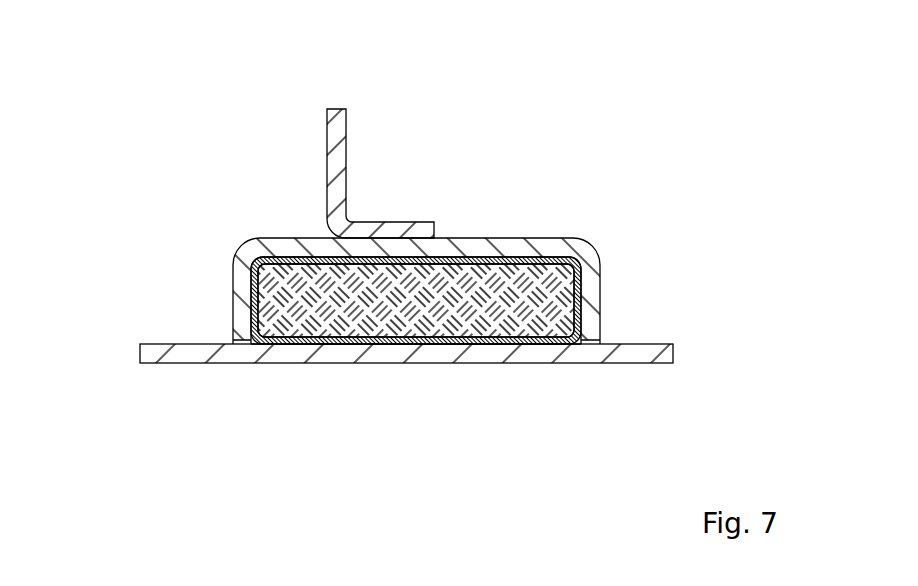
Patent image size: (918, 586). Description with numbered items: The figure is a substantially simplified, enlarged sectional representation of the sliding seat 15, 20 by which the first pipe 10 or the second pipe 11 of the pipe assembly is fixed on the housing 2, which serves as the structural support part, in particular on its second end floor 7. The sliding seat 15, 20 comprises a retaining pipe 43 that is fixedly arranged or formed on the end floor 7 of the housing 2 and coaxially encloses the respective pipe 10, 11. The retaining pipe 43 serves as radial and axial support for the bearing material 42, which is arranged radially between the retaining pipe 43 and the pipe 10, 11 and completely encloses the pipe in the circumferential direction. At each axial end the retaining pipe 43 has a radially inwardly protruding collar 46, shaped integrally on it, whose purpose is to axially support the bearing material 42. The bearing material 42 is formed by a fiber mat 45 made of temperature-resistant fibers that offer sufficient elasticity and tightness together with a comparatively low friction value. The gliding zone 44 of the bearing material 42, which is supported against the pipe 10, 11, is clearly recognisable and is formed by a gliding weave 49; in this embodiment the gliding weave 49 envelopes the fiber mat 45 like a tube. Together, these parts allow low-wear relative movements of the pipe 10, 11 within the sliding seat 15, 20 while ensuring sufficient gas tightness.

The housing 2 is at (384, 140).
The second end floor 7 is at (347, 160).
The first pipe 10 is at (406, 416).
The second pipe 11 is at (209, 364).
The sliding seat 15 is at (399, 300).
The sliding seat 20 is at (399, 300).
The bearing material 42 is at (416, 244).
The retaining pipe 43 is at (416, 237).
The gliding zone 44 is at (410, 350).
The fiber mat 45 is at (488, 287).
The collar 46 is at (233, 307).
The gliding weave 49 is at (473, 347).